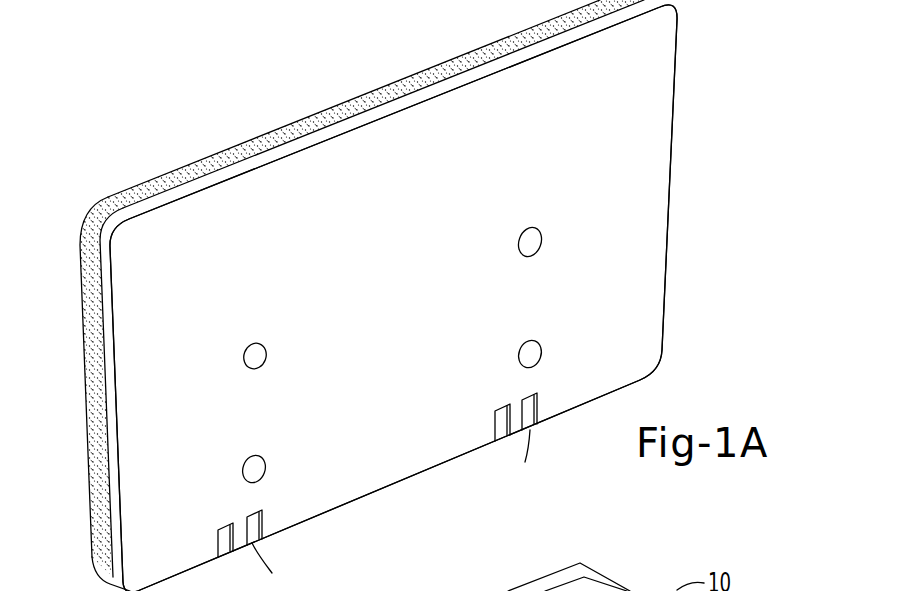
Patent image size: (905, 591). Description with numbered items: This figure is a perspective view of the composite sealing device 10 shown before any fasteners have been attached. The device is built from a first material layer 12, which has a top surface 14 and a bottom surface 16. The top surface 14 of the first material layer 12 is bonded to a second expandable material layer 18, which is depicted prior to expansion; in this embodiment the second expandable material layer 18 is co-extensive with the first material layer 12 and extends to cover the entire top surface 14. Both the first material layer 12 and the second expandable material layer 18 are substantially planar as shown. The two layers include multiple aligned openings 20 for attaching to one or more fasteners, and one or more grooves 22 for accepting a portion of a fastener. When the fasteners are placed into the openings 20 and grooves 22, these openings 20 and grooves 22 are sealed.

The composite sealing device 10 is at (400, 295).
The first material layer 12 is at (670, 153).
The top surface 14 is at (100, 372).
The bottom surface 16 is at (380, 271).
The second expandable material layer 18 is at (327, 116).
The openings 20 is at (248, 368).
The grooves 22 is at (222, 555).